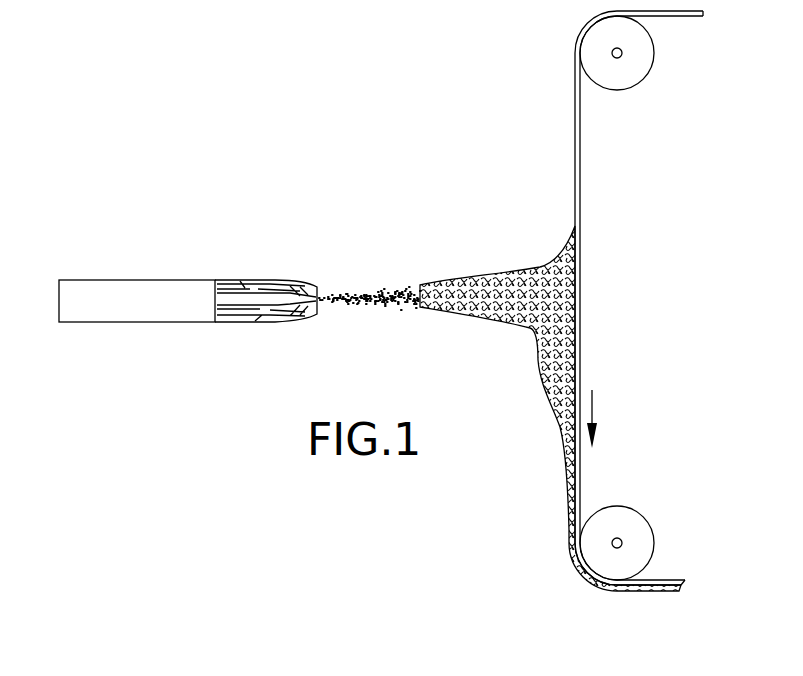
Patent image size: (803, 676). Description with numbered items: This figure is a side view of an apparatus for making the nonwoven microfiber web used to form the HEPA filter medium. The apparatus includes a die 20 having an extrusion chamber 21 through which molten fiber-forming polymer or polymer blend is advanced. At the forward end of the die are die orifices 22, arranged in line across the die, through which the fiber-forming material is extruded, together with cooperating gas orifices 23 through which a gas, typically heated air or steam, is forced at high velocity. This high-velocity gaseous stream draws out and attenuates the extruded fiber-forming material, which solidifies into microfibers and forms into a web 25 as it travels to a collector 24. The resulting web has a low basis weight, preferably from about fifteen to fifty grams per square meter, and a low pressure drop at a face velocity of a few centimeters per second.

The die 20 is at (137, 270).
The extrusion chamber 21 is at (241, 298).
The die orifices 22 is at (318, 302).
The gas orifices 23 is at (287, 322).
The collector 24 is at (582, 163).
The web 25 is at (570, 513).